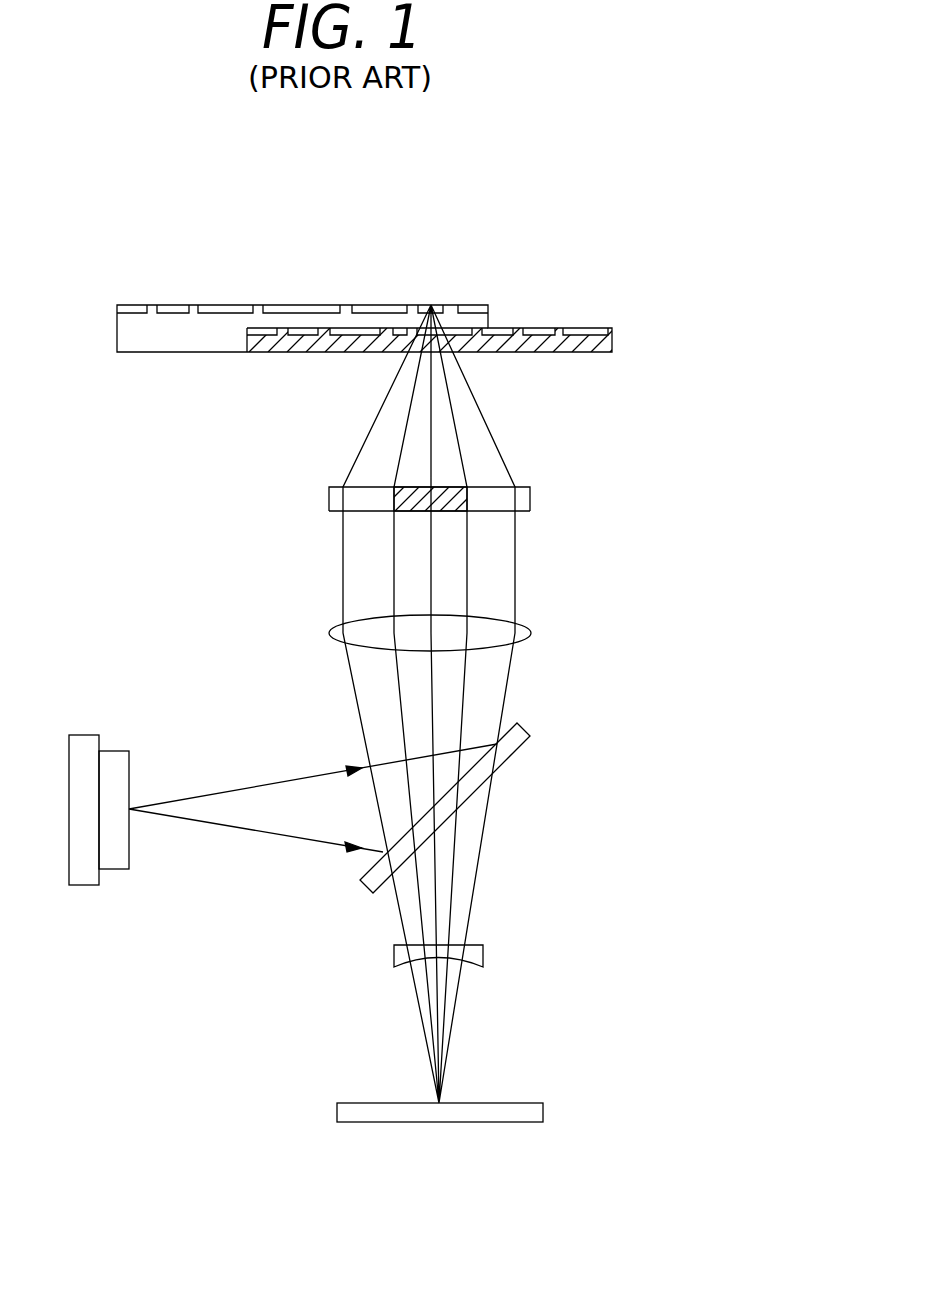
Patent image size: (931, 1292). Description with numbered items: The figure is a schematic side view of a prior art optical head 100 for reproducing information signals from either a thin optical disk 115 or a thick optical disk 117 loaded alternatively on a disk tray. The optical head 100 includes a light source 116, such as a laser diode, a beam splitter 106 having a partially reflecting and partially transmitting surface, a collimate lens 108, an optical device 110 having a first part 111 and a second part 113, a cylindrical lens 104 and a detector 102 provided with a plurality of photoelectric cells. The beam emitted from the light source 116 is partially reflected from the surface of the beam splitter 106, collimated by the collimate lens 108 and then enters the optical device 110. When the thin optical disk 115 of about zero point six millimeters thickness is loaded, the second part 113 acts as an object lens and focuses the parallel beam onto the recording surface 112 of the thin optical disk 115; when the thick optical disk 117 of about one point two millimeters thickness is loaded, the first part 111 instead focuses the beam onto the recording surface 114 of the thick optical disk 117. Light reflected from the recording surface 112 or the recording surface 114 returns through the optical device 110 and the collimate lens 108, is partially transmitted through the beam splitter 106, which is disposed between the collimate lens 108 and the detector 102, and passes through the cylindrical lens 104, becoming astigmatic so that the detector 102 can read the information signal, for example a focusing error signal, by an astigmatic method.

The optical head 100 is at (587, 150).
The detector 102 is at (503, 1115).
The cylindrical lens 104 is at (477, 952).
The beam splitter 106 is at (517, 743).
The collimate lens 108 is at (523, 633).
The optical device 110 is at (540, 493).
The first part 111 is at (413, 503).
The recording surface 112 is at (588, 328).
The second part 113 is at (343, 502).
The recording surface 114 is at (172, 308).
The thin optical disk 115 is at (567, 352).
The light source 116 is at (82, 882).
The thick optical disk 117 is at (170, 352).